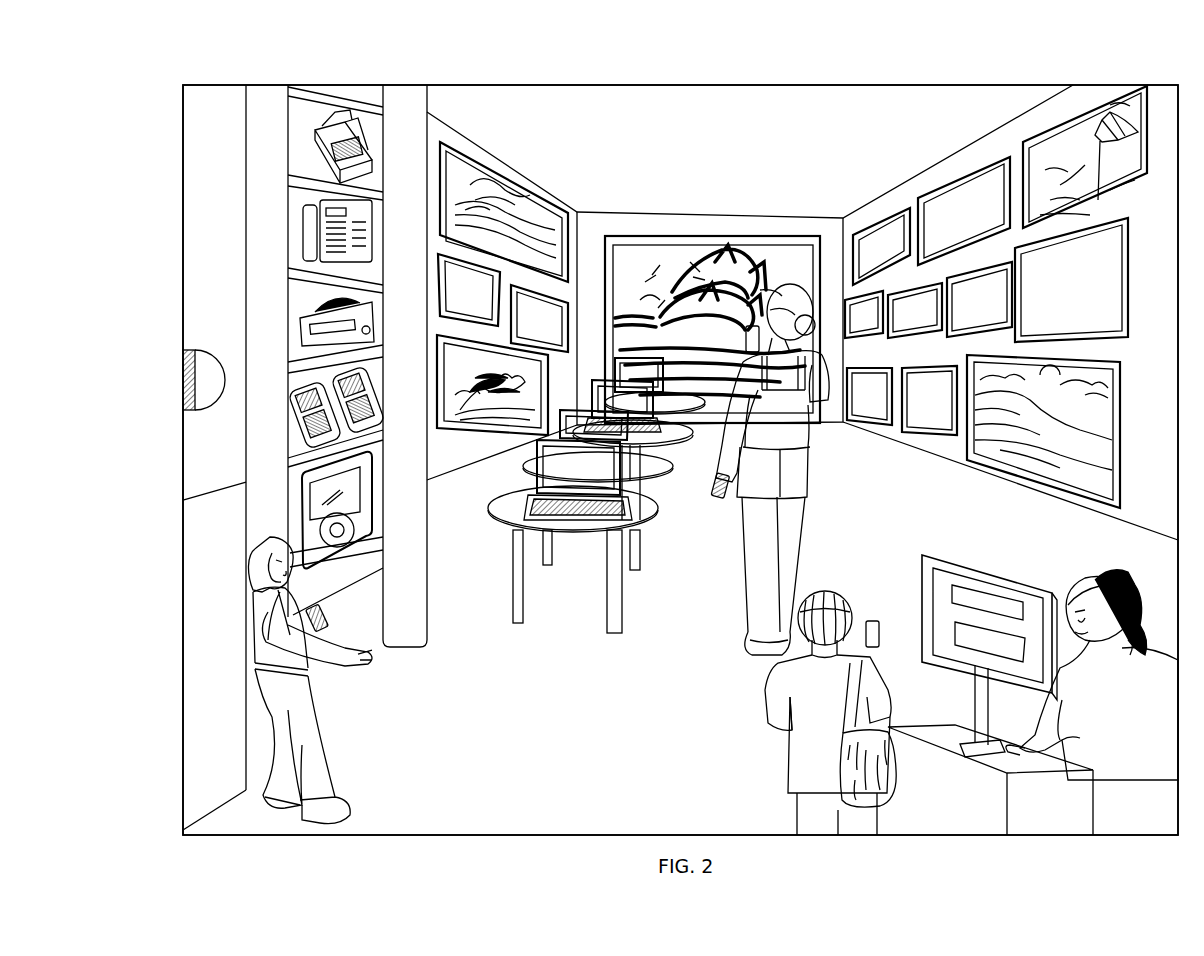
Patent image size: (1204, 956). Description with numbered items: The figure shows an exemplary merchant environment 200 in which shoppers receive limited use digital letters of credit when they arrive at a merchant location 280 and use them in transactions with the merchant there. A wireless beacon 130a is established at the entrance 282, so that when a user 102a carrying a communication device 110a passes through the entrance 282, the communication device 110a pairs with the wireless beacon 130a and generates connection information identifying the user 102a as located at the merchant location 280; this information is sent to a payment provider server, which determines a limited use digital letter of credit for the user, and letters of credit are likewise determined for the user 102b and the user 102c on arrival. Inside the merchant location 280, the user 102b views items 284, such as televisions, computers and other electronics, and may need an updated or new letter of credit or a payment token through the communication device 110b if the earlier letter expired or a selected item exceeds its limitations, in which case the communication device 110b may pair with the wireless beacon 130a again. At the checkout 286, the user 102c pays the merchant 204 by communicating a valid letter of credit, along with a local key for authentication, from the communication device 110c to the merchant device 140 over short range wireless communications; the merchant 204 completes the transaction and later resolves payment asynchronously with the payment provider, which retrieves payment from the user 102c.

The environment 200 is at (968, 60).
The merchant location 280 is at (826, 116).
The entrance 282 is at (190, 627).
The items 284 is at (496, 176).
The checkout 286 is at (968, 829).
The wireless beacon 130a is at (211, 348).
The user 102a is at (310, 703).
The user 102b is at (812, 448).
The user 102c is at (820, 590).
The communication device 110a is at (355, 613).
The communication device 110b is at (742, 322).
The communication device 110c is at (878, 618).
The merchant device 140 is at (1000, 570).
The merchant 204 is at (1070, 590).